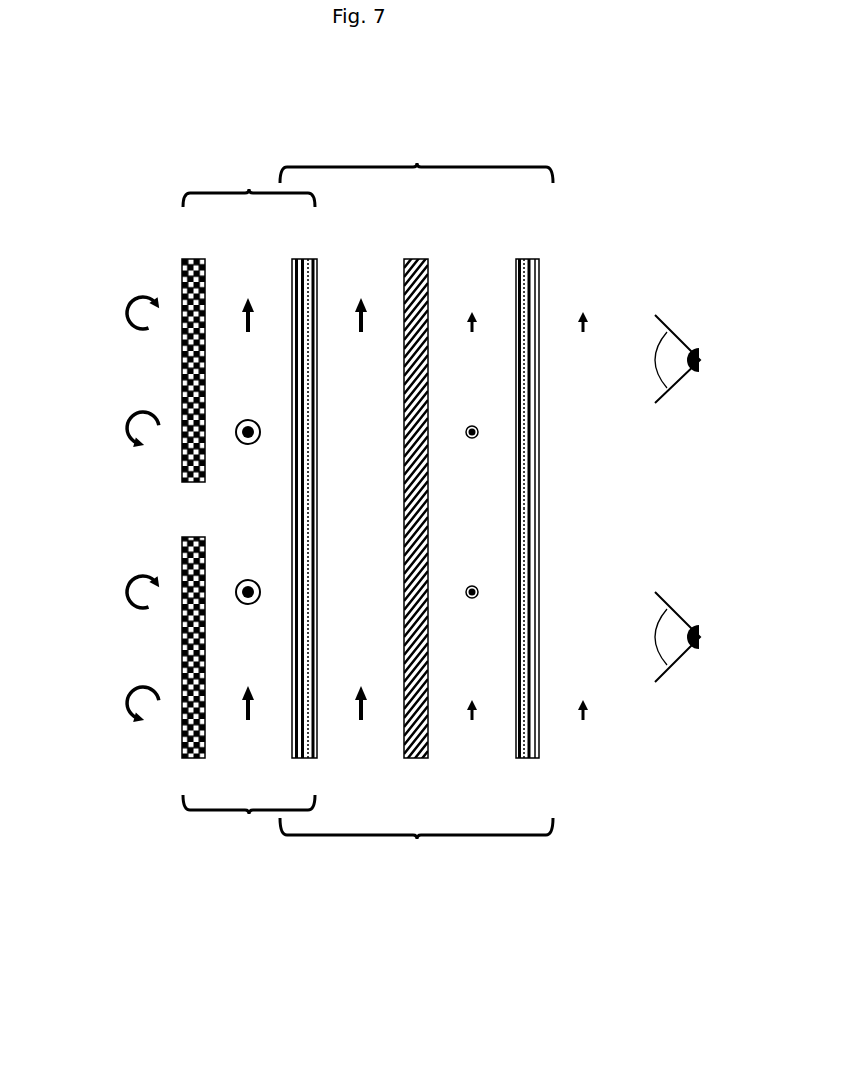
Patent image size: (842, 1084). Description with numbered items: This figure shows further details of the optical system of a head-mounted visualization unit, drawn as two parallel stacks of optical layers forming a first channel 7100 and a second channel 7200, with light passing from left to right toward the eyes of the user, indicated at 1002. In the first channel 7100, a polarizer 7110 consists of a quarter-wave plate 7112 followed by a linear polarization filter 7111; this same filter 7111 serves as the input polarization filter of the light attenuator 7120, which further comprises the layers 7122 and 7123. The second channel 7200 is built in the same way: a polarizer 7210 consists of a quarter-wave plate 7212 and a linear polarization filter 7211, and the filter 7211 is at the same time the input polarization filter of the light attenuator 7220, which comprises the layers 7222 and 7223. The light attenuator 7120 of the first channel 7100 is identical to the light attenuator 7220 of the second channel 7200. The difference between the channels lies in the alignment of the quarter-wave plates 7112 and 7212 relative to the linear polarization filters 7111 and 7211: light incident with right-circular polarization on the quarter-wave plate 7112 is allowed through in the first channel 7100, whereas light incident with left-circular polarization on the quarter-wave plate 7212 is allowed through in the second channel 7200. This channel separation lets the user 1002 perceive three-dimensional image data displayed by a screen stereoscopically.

The first channel 7100 is at (320, 372).
The second channel 7200 is at (320, 649).
The polarizer 7110 is at (249, 190).
The light attenuator 7120 is at (417, 165).
The polarizer 7210 is at (249, 812).
The light attenuator 7220 is at (417, 835).
The λ/4 plate 7112 is at (193, 258).
The input polarization filter 7111 is at (304, 258).
The first retarder layer 7122 is at (413, 258).
The second polarizer 7123 is at (525, 258).
The λ/4 plate 7212 is at (192, 760).
The linear polarization filter 7211 is at (304, 760).
The second retarder layer 7222 is at (413, 760).
The second polarizer (second pixel) 7223 is at (525, 760).
The viewer eyes 1002 is at (700, 362).